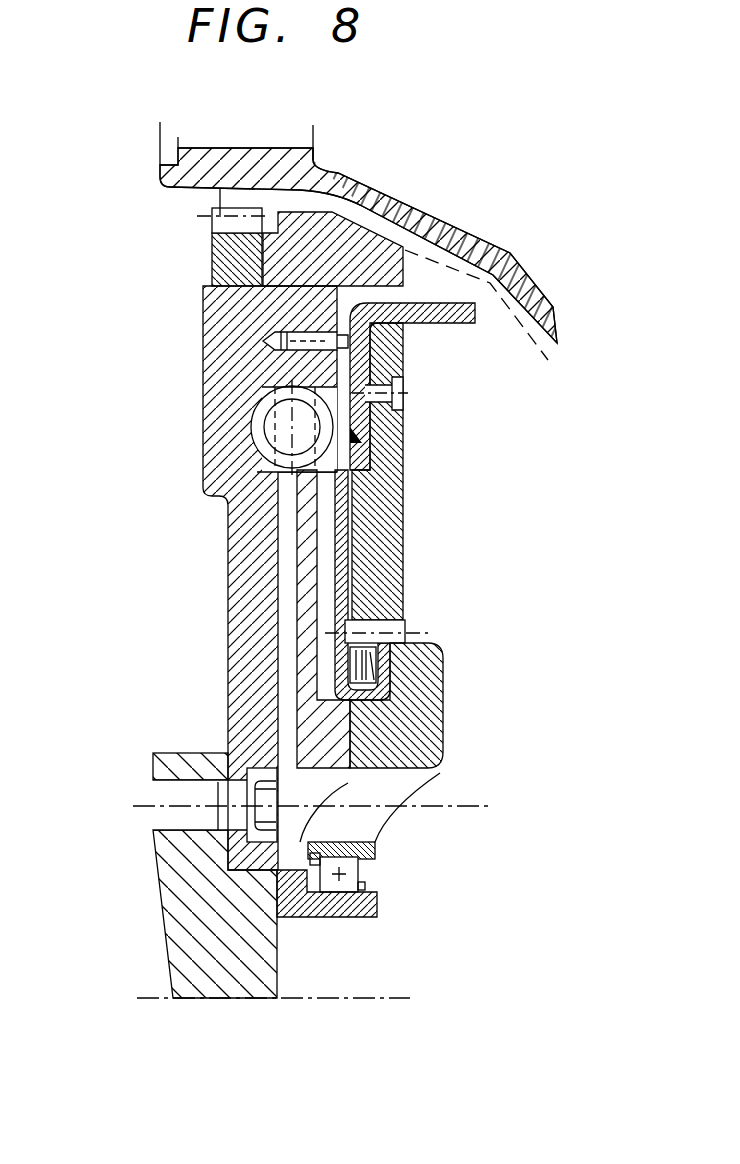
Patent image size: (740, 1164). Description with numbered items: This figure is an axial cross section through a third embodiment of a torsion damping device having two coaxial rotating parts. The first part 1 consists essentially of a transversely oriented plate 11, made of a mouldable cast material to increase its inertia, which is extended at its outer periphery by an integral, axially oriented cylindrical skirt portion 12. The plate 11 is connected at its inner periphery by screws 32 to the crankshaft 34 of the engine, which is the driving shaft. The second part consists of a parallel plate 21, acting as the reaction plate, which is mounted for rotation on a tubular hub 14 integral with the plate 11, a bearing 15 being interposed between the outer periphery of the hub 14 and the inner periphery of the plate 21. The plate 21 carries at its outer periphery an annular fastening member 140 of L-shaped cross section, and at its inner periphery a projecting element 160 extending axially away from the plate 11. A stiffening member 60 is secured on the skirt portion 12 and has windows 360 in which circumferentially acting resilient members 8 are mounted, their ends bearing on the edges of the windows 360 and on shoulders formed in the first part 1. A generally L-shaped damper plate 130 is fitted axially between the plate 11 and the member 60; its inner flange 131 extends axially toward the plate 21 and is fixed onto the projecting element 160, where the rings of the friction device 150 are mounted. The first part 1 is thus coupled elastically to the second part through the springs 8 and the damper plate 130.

The first part 1 is at (148, 367).
The resilient means 8 is at (253, 438).
The plate 11 is at (232, 537).
The skirt portion 12 is at (330, 240).
The tubular hub 14 is at (350, 910).
The bearing 15 is at (358, 870).
The plate 21 is at (403, 517).
The screws 32 is at (163, 815).
The crankshaft 34 is at (177, 753).
The stiffening member 60 is at (340, 303).
The damper plate 130 is at (330, 570).
The flange 131 is at (327, 758).
The annular fastening member 140 is at (465, 303).
The friction device 150 is at (400, 655).
The projecting element 160 is at (443, 727).
The windows 360 is at (352, 443).